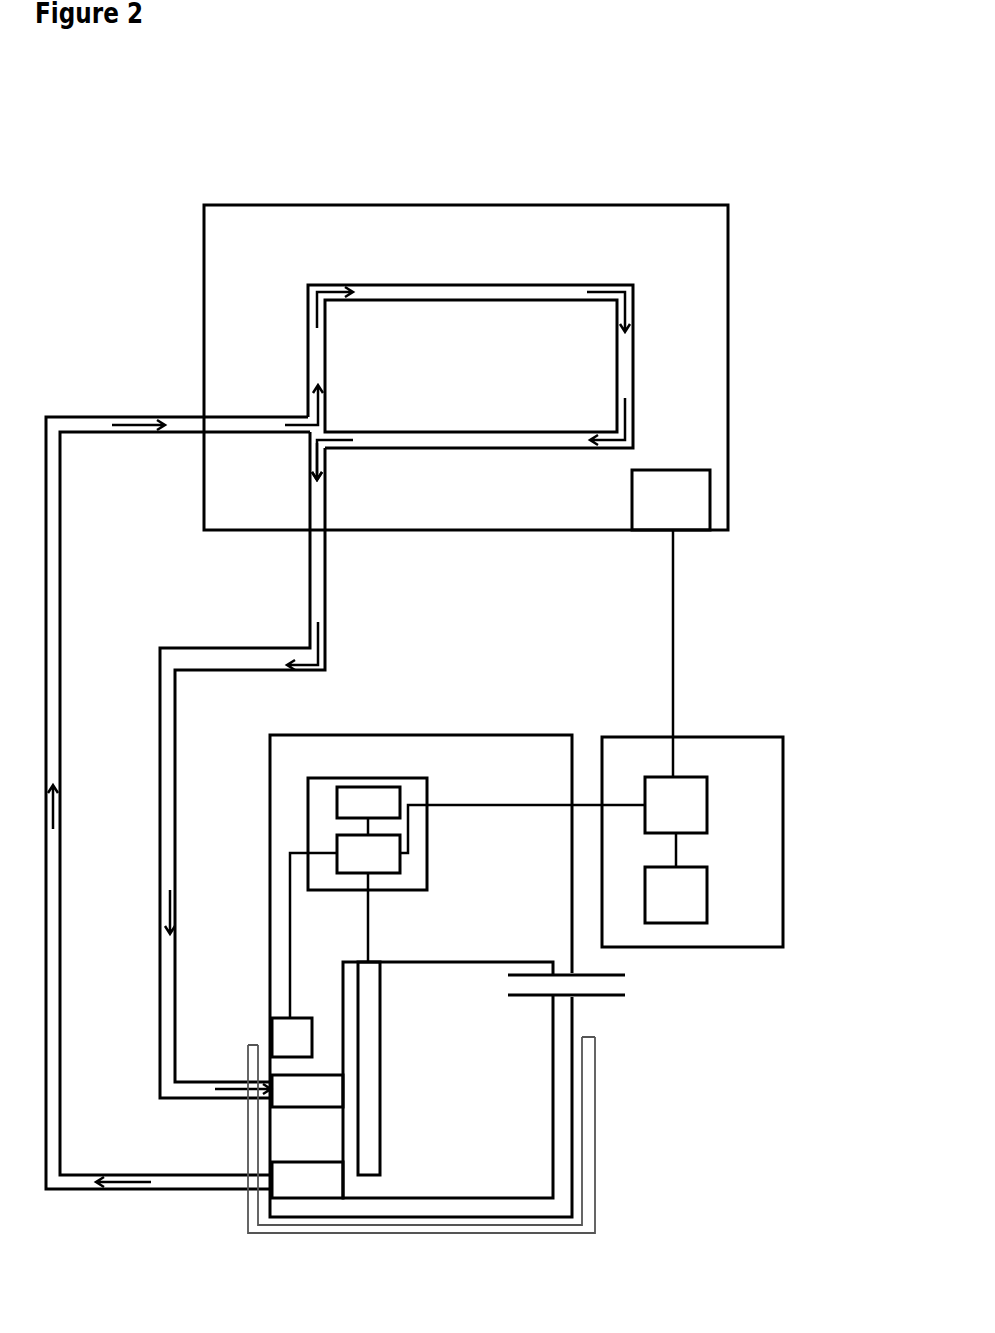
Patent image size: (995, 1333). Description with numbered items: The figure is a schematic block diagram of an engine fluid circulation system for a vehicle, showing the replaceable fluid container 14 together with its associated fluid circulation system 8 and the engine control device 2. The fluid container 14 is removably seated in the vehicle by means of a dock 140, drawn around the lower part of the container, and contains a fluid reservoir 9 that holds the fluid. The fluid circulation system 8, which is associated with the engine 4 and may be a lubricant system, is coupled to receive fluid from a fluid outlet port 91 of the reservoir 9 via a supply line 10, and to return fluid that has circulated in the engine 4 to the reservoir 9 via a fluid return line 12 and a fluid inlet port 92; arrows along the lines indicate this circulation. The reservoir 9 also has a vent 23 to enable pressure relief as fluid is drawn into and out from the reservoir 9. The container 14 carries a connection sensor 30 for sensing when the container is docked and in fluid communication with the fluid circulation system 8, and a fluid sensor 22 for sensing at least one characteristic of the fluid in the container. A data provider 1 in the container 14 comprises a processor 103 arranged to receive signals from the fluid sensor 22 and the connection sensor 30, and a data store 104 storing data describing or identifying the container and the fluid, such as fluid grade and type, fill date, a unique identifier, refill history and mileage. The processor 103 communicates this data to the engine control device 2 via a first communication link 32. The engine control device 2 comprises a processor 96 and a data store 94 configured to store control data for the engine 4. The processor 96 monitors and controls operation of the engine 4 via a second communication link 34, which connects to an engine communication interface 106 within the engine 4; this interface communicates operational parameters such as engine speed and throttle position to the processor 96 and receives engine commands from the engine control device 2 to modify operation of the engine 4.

The engine 4 is at (466, 364).
The fluid circulation system 8 is at (433, 302).
The engine communication interface 106 is at (671, 500).
The second communication link 34 is at (675, 620).
The engine control device 2 is at (692, 842).
The processor 96 is at (676, 805).
The data store 94 is at (676, 895).
The first communication link 32 is at (522, 829).
The replaceable fluid container 14 is at (421, 976).
The data provider 1 is at (367, 834).
The data store 104 is at (368, 802).
The processor 103 is at (368, 845).
The connection sensor 30 is at (304, 955).
The fluid inlet port 92 is at (307, 1091).
The fluid outlet port 91 is at (307, 1180).
The fluid reservoir 9 is at (448, 1080).
The fluid sensor 22 is at (382, 1002).
The vent 23 is at (600, 985).
The fluid return line 12 is at (162, 829).
The supply line 10 is at (60, 934).
The dock 140 is at (597, 1230).